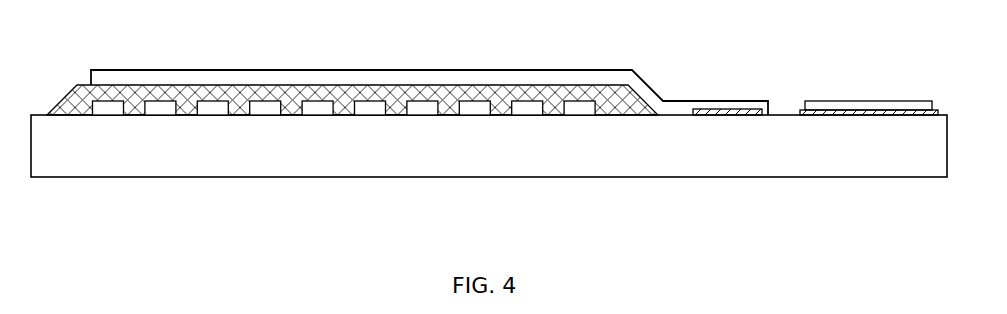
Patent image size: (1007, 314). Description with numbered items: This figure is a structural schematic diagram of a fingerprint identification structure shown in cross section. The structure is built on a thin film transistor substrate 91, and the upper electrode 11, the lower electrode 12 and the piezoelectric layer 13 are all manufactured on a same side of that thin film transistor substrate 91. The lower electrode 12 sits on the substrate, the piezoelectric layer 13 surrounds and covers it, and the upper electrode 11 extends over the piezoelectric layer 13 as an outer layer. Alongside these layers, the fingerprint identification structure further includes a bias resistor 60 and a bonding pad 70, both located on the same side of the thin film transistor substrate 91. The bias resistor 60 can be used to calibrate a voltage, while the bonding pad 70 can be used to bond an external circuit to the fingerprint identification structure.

The upper electrode 11 is at (429, 74).
The lower electrode 12 is at (344, 74).
The piezoelectric layer 13 is at (352, 74).
The bias resistor 60 is at (742, 74).
The bonding pad 70 is at (869, 74).
The thin film transistor substrate 91 is at (489, 170).